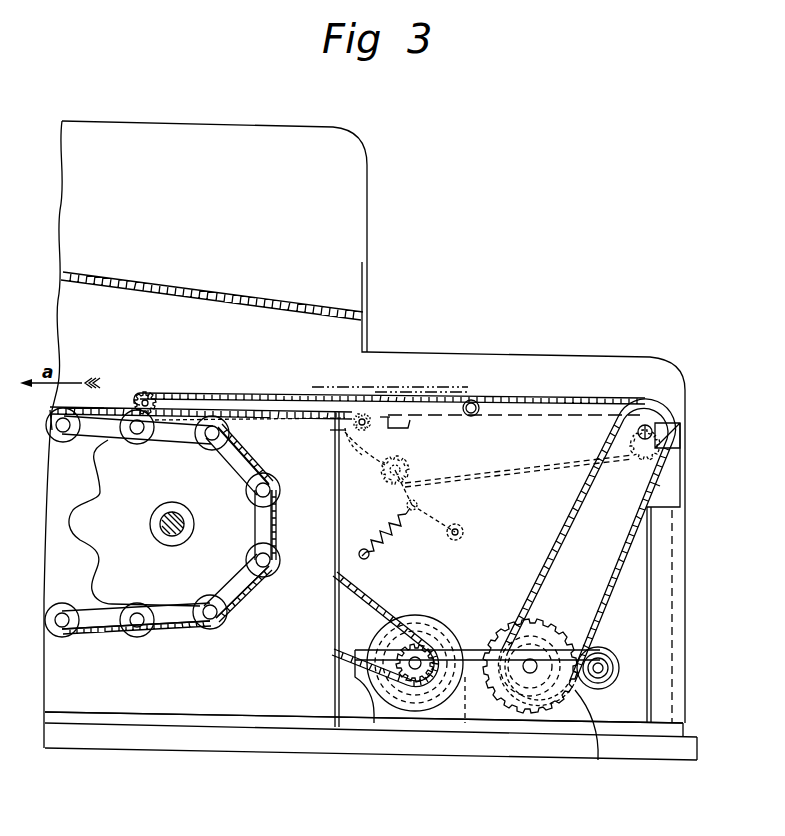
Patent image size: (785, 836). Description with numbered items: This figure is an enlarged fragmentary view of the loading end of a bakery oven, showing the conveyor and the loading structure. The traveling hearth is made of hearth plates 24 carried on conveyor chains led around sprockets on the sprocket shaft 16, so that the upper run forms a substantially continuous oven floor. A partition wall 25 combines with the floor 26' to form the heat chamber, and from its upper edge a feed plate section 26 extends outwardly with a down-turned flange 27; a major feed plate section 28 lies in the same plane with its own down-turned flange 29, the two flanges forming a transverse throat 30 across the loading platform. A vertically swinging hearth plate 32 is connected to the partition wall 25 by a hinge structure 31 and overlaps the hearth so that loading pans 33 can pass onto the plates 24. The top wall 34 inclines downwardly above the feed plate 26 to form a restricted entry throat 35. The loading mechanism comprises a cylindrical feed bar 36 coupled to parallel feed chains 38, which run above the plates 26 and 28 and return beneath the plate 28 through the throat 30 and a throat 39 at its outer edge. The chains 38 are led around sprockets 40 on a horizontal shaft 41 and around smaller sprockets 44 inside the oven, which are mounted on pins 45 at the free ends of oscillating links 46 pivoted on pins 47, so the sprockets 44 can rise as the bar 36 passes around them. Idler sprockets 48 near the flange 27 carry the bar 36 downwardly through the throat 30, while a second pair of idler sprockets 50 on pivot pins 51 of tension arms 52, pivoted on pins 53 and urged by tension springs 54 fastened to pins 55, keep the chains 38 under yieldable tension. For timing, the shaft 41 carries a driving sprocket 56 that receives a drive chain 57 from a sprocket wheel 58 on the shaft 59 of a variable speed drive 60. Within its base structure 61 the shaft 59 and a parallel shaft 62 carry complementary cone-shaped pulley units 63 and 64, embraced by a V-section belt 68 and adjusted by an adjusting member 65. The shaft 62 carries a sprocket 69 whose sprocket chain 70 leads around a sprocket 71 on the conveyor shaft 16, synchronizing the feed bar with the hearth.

The sprocket shaft 16 is at (180, 534).
The hearth plates 24 is at (102, 406).
The partition wall 25 is at (337, 612).
The feed plate section 26 is at (390, 377).
The floor 26' is at (364, 702).
The down-turned flange 27 is at (374, 448).
The major feed plate section 28 is at (520, 414).
The down-turned flange 29 is at (410, 428).
The transverse throat 30 is at (385, 417).
The hinge structure 31 is at (338, 430).
The hearth plate 32 is at (240, 396).
The loading pans 33 is at (445, 396).
The top wall 34 is at (112, 276).
The entry throat 35 is at (343, 354).
The feed bar 36 is at (474, 400).
The feed chains 38 is at (590, 397).
The throat 39 is at (672, 440).
The sprockets 40 is at (645, 412).
The horizontal shaft 41 is at (636, 430).
The sprockets 44 is at (178, 406).
The pins 45 is at (142, 394).
The oscillating links 46 is at (110, 406).
The pins 47 is at (38, 412).
The idler sprockets 48 is at (345, 458).
The idler sprockets 50 is at (440, 477).
The pivot pins 51 is at (406, 505).
The tension arms 52 is at (462, 527).
The pivot pins 53 is at (465, 536).
The tension springs 54 is at (398, 545).
The pins 55 is at (366, 558).
The driving sprocket 56 is at (680, 440).
The drive chain 57 is at (652, 490).
The sprocket wheel 58 is at (535, 640).
The shaft 59 is at (530, 673).
The variable speed drive 60 is at (470, 648).
The base structure 61 is at (598, 760).
The shaft 62 is at (418, 668).
The cone-shaped pulley units 63 is at (568, 632).
The cone-shaped pulley units 64 is at (374, 651).
The adjusting member 65 is at (614, 652).
The belt 68 is at (465, 723).
The sprocket 69 is at (420, 642).
The sprocket chain 70 is at (372, 614).
The sprocket 71 is at (222, 493).